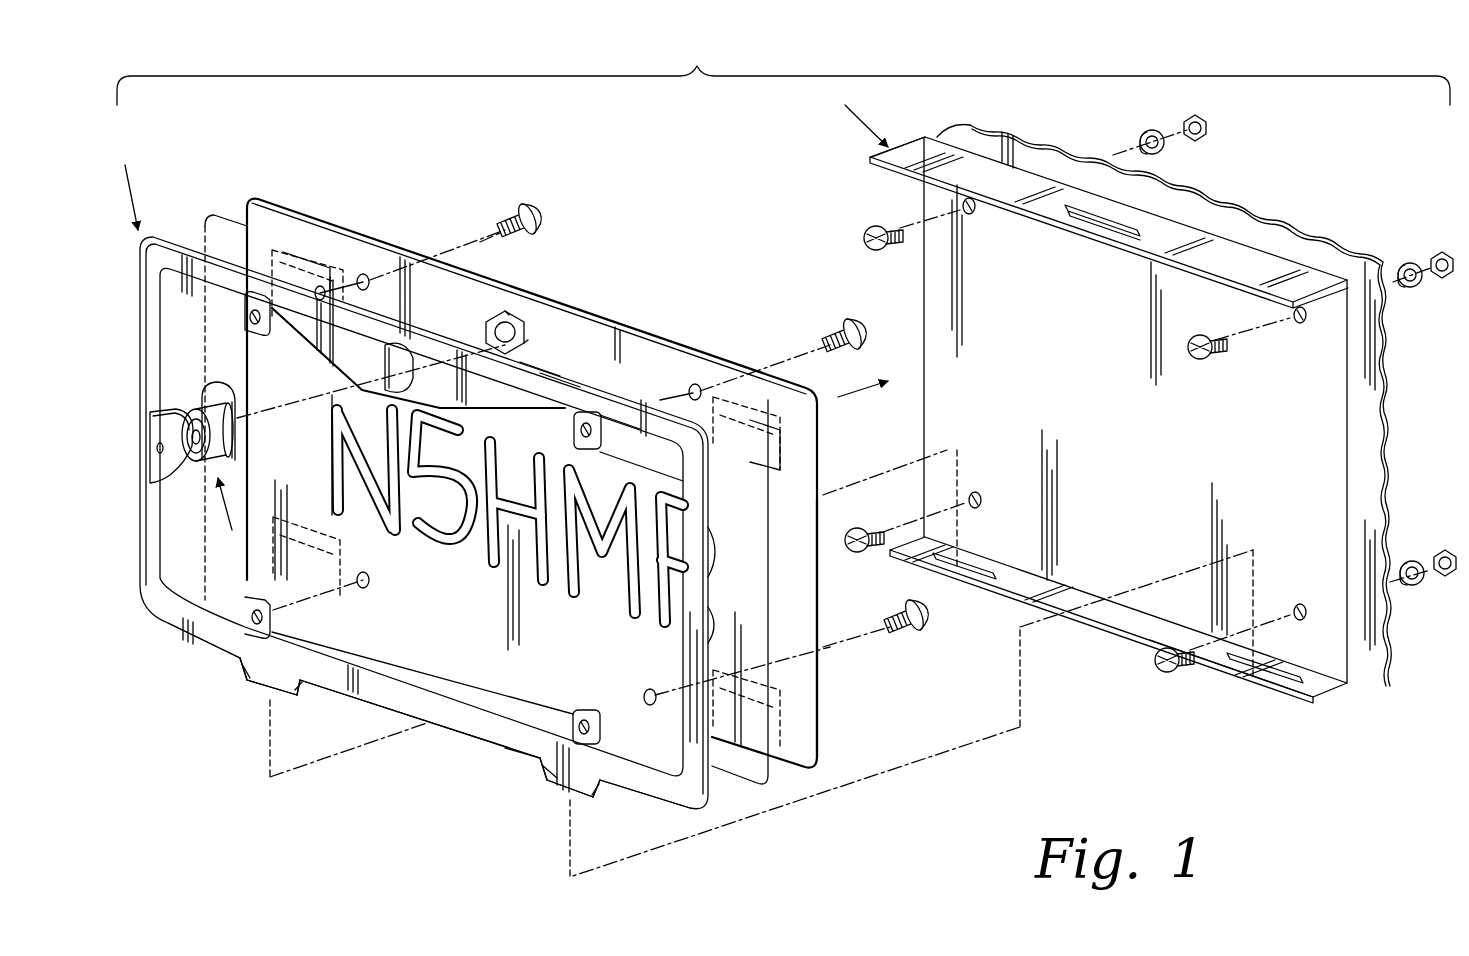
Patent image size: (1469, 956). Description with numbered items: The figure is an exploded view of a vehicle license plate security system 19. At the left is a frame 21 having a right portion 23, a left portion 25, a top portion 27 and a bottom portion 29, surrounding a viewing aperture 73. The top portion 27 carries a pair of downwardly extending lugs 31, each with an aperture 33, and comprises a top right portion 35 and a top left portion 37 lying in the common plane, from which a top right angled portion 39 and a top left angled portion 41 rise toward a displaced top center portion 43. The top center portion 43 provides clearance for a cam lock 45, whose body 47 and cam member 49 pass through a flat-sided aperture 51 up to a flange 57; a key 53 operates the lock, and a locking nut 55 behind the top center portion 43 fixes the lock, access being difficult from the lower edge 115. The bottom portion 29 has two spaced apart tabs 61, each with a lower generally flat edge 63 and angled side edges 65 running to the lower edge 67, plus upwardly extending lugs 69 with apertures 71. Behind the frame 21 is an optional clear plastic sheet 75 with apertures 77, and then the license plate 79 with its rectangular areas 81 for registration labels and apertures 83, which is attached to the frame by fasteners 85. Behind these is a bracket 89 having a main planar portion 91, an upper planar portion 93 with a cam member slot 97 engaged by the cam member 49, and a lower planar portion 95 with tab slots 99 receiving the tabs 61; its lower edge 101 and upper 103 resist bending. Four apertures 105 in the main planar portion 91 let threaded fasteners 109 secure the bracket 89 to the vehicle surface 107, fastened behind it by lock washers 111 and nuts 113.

The vehicle license plate security system 19 is at (783, 67).
The frame 21 is at (120, 183).
The right portion 23 is at (705, 805).
The left portion 25 is at (140, 545).
The top portion 27 is at (565, 382).
The bottom portion 29 is at (445, 735).
The downwardly extending lugs 31 is at (597, 452).
The aperture 33 is at (580, 430).
The top right portion 35 is at (625, 405).
The top left portion 37 is at (200, 258).
The top right angled portion 39 is at (540, 385).
The top left angled portion 41 is at (300, 322).
The top center portion 43 is at (445, 310).
The cam lock 45 is at (225, 517).
The body 47 is at (234, 456).
The cam member 49 is at (202, 390).
The aperture 51 is at (397, 372).
The key 53 is at (152, 455).
The locking nut 55 is at (515, 315).
The flange 57 is at (180, 403).
The tabs 61 is at (580, 797).
The lower generally flat edge 63 is at (600, 785).
The angled side edges 65 is at (540, 765).
The lower edge 67 is at (680, 806).
The upwardly extending lugs 69 is at (587, 710).
The aperture 71 is at (575, 715).
The viewing aperture 73 is at (690, 470).
The clear plastic sheet 75 is at (230, 212).
The apertures 77 is at (650, 693).
The license plate 79 is at (819, 745).
The rectangular areas 81 is at (819, 708).
The apertures 83 is at (368, 580).
The fasteners 85 is at (907, 625).
The bracket 89 is at (843, 116).
The main planar portion 91 is at (1149, 407).
The upper planar portion 93 is at (1243, 240).
The lower planar portion 95 is at (1140, 640).
The cam member slot 97 is at (1122, 228).
The tab slots 99 is at (1298, 672).
The lower edge 101 is at (1245, 690).
The upper 103 is at (880, 165).
The apertures 105 is at (1298, 605).
The vehicle surface 107 is at (1030, 140).
The threaded fasteners 109 is at (1172, 650).
The lock washers 111 is at (1413, 586).
The nuts 113 is at (1445, 550).
The lower edge 115 is at (335, 388).